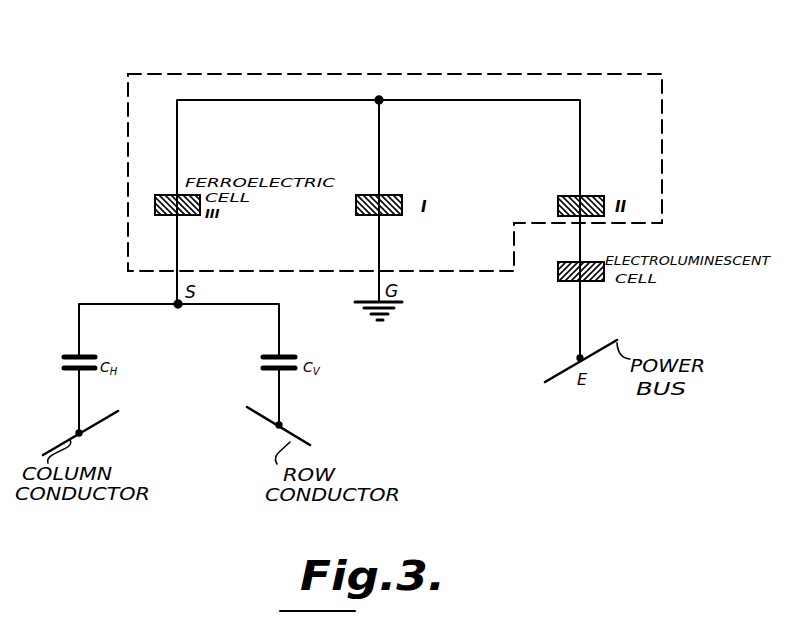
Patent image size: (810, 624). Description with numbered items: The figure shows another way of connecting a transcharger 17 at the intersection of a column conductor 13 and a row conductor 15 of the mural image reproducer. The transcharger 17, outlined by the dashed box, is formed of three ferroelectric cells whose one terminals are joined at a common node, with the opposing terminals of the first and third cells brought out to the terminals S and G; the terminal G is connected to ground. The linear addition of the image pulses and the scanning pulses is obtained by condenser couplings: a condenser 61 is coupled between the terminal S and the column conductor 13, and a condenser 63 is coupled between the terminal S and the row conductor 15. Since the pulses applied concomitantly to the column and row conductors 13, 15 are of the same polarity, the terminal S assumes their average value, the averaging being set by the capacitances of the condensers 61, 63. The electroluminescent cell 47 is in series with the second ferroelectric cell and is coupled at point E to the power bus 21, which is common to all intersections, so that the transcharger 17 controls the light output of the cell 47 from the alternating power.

The transcharger 17 is at (368, 46).
The condenser 61 is at (85, 355).
The condenser 63 is at (290, 354).
The column conductor 13 is at (102, 420).
The row conductor 15 is at (305, 437).
The electroluminescent cell 47 is at (570, 283).
The power bus 21 is at (558, 374).